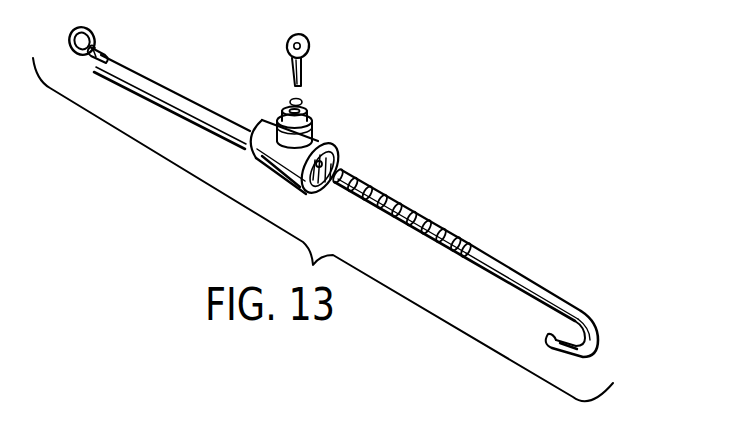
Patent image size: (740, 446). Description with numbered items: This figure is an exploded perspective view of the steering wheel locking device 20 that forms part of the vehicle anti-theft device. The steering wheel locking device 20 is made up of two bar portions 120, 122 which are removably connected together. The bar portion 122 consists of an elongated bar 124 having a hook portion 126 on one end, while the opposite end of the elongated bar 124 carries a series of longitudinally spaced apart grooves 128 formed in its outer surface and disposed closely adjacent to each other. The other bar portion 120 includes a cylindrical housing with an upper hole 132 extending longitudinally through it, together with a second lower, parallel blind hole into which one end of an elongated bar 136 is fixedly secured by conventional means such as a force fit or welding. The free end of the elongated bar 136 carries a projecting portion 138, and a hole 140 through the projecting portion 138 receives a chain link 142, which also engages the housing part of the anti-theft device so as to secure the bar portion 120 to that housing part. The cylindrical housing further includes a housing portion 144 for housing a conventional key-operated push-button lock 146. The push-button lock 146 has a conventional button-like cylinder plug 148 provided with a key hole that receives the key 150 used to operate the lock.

The steering wheel locking device 20 is at (366, 158).
The bar portion 120 is at (225, 97).
The bar portion 122 is at (495, 238).
The elongated bar 124 is at (512, 268).
The hook portion 126 is at (541, 333).
The grooves 128 is at (383, 190).
The upper hole 132 is at (330, 155).
The elongated bar 136 is at (152, 89).
The projecting portion 138 is at (93, 63).
The hole 140 is at (107, 57).
The chain link 142 is at (93, 32).
The housing portion 144 is at (310, 122).
The key-operated push-button lock 146 is at (313, 90).
The button-like cylinder plug 148 is at (289, 102).
The key 150 is at (311, 52).